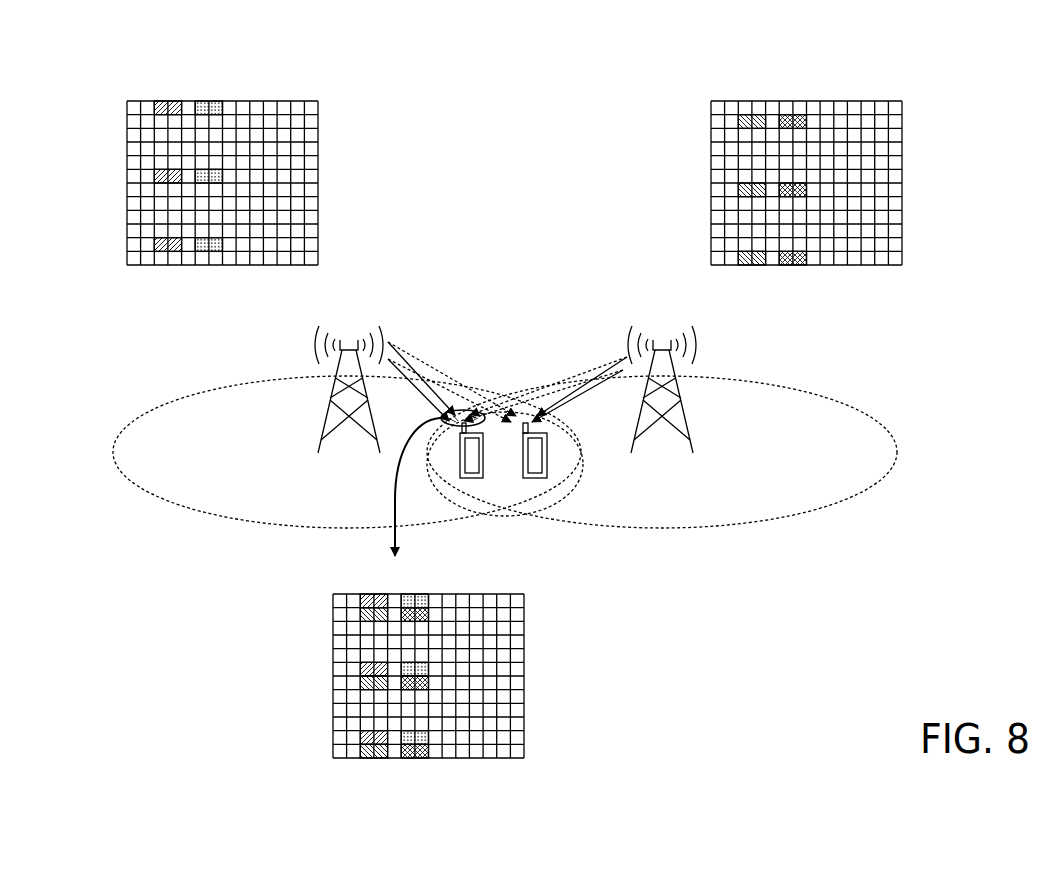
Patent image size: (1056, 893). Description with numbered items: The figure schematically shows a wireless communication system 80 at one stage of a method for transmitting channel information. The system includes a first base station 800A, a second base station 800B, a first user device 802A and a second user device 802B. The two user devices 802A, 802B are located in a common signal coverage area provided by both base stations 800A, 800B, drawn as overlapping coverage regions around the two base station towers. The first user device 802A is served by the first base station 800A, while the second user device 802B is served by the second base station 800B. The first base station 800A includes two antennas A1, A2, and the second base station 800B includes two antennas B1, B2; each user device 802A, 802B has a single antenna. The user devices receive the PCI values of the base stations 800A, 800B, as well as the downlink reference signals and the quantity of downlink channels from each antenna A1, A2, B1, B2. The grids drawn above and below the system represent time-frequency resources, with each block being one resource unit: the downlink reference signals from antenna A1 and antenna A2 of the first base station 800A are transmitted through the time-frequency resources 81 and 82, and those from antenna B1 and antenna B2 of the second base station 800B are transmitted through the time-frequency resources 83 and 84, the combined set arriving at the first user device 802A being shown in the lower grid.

The wireless communication system 80 is at (73, 77).
The time-frequency resource 81 is at (165, 101).
The time-frequency resource 82 is at (206, 101).
The time-frequency resource 83 is at (750, 115).
The time-frequency resource 84 is at (790, 115).
The first base station 800A is at (347, 408).
The second base station 800B is at (662, 408).
The first user device 802A is at (472, 478).
The second user device 802B is at (535, 478).
The antenna A1 is at (332, 326).
The antenna A2 is at (366, 326).
The antenna B1 is at (645, 326).
The antenna B2 is at (679, 326).